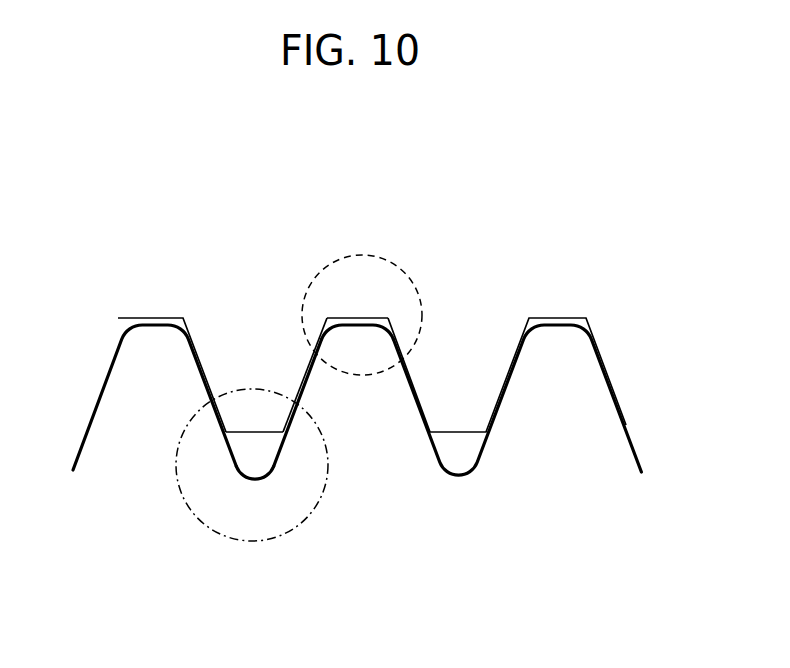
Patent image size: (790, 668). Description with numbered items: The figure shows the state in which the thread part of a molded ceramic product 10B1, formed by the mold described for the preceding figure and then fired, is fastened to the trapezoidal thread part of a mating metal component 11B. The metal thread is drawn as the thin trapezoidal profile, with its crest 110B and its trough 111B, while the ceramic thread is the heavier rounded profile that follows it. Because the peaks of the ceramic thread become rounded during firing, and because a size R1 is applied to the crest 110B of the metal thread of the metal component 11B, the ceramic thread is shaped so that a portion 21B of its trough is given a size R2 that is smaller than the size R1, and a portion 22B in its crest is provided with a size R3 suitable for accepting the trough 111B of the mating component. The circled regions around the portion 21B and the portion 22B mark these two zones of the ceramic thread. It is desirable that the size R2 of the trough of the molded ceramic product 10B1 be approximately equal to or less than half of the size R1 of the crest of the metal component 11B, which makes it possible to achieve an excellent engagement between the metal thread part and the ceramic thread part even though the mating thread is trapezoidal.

The metal component 11B is at (548, 225).
The molded ceramic product 10B1 is at (357, 470).
The crest 110B is at (372, 324).
The trough 111B is at (334, 320).
The portion in the crest 22B is at (413, 290).
The portion of the trough 21B is at (252, 541).
The size of the crest R1 is at (257, 432).
The size of the trough R2 is at (255, 477).
The size in the crest R3 is at (356, 326).